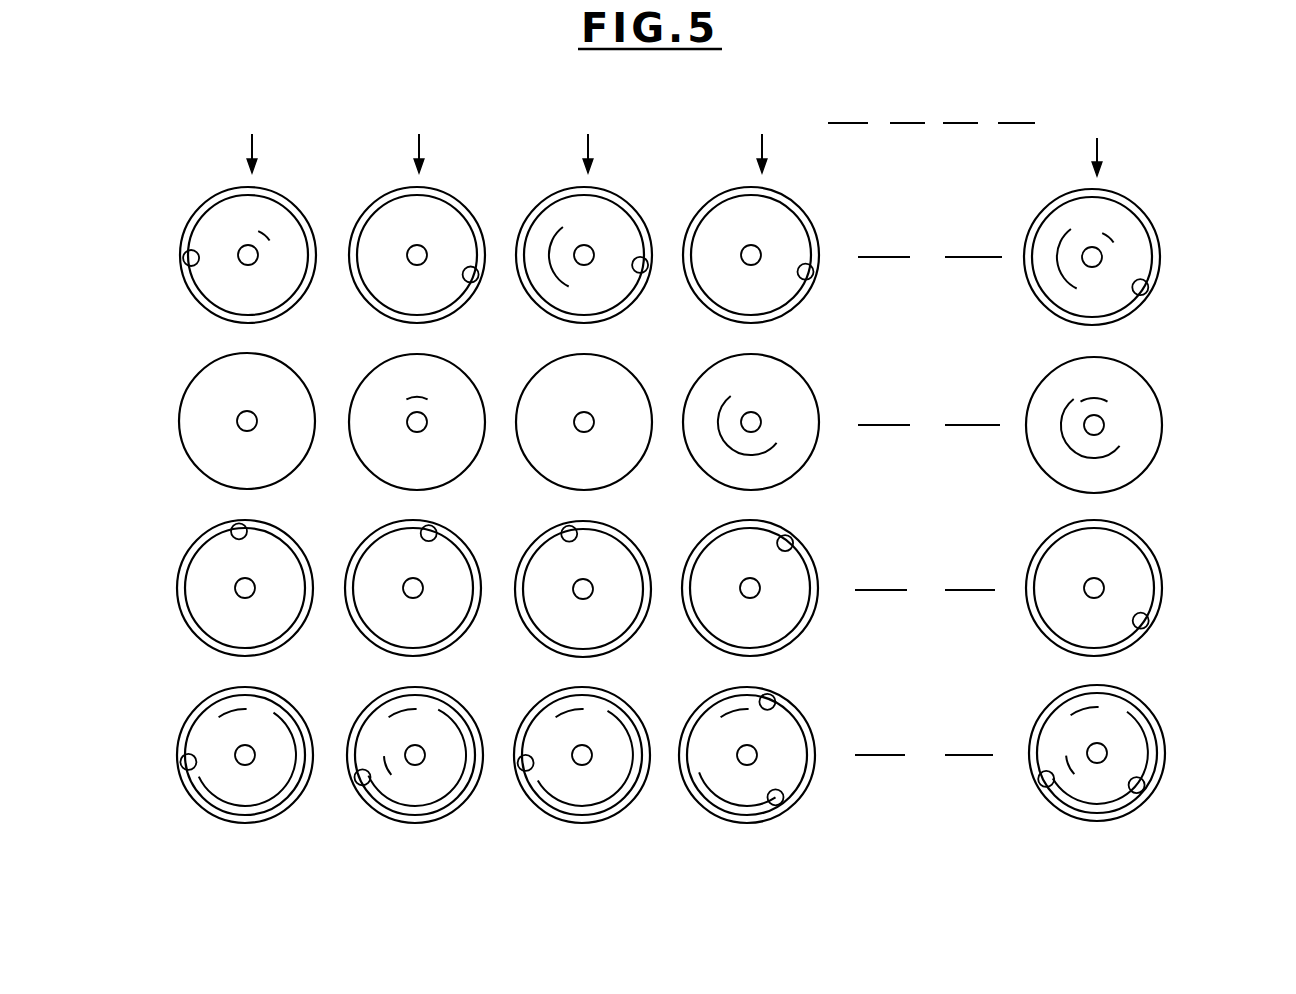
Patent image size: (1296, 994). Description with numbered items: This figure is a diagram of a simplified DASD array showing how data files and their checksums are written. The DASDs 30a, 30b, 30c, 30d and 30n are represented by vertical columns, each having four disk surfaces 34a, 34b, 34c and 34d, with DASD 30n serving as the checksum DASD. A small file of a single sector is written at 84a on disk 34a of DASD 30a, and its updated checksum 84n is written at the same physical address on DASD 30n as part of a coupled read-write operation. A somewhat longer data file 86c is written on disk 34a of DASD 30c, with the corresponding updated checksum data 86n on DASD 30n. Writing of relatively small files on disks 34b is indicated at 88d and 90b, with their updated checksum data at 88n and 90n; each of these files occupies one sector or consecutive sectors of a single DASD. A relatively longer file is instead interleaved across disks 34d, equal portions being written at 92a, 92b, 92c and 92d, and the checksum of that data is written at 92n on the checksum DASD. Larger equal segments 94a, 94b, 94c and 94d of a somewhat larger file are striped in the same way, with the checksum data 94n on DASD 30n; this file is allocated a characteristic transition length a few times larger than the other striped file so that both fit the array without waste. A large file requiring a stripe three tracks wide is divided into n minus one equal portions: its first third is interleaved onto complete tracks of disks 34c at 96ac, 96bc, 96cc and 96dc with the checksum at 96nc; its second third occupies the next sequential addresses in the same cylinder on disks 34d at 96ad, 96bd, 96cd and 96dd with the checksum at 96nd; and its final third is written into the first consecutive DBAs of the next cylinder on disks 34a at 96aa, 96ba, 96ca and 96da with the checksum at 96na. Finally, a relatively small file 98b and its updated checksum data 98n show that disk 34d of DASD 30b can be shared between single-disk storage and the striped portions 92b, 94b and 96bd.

The DASD 30a is at (255, 140).
The DASD 30b is at (425, 140).
The DASD 30c is at (592, 140).
The DASD 30d is at (760, 140).
The checksum DASD 30n is at (1097, 144).
The disk surface 34a is at (183, 240).
The disk surface 34b is at (197, 376).
The disk surface 34c is at (177, 578).
The disk surface 34d is at (178, 748).
The small file 84a is at (278, 237).
The updated checksum 84n is at (1114, 243).
The data file 86c is at (562, 232).
The updated checksum data 86n is at (1071, 229).
The small file 88d is at (777, 443).
The updated checksum data 88n is at (1061, 432).
The small file 90b is at (421, 398).
The updated checksum data 90n is at (1094, 401).
The file portion 92a is at (219, 717).
The file portion 92b is at (389, 717).
The file portion 92c is at (556, 717).
The file portion 92d is at (721, 717).
The checksum 92n is at (1071, 715).
The file segment 94a is at (267, 801).
The file segment 94b is at (458, 782).
The file segment 94c is at (626, 780).
The file segment 94d is at (776, 797).
The checksum data 94n is at (1137, 785).
The small file location 98b is at (384, 757).
The updated checksum data 98n is at (1066, 756).
The file track portion 96aa is at (191, 258).
The file track portion 96ba is at (470, 275).
The file track portion 96ca is at (641, 266).
The file track portion 96da is at (806, 272).
The checksum 96na is at (1141, 287).
The file track 96ac is at (239, 535).
The file track 96bc is at (429, 533).
The file track 96cc is at (569, 535).
The file track 96dc is at (785, 543).
The checksum 96nc is at (1141, 621).
The file track 96ad is at (188, 762).
The file track 96bd is at (363, 777).
The file track 96cd is at (526, 763).
The file track 96dd is at (767, 702).
The checksum 96nd is at (1046, 779).